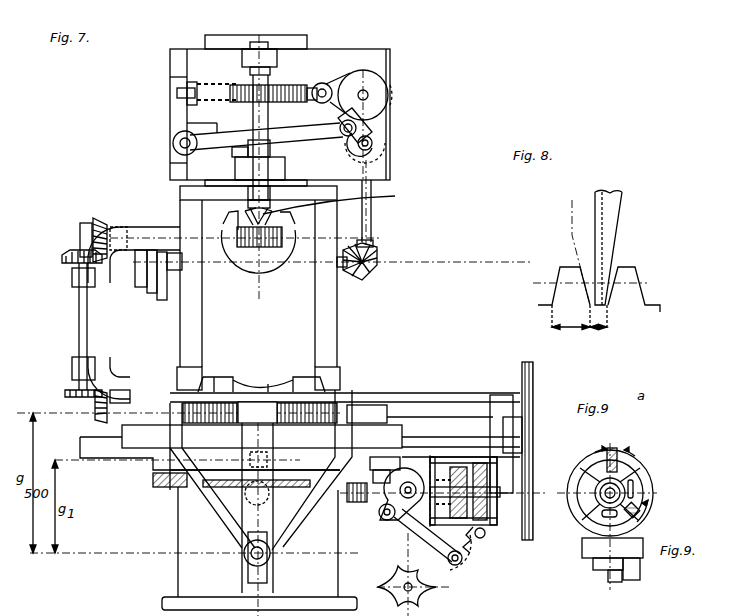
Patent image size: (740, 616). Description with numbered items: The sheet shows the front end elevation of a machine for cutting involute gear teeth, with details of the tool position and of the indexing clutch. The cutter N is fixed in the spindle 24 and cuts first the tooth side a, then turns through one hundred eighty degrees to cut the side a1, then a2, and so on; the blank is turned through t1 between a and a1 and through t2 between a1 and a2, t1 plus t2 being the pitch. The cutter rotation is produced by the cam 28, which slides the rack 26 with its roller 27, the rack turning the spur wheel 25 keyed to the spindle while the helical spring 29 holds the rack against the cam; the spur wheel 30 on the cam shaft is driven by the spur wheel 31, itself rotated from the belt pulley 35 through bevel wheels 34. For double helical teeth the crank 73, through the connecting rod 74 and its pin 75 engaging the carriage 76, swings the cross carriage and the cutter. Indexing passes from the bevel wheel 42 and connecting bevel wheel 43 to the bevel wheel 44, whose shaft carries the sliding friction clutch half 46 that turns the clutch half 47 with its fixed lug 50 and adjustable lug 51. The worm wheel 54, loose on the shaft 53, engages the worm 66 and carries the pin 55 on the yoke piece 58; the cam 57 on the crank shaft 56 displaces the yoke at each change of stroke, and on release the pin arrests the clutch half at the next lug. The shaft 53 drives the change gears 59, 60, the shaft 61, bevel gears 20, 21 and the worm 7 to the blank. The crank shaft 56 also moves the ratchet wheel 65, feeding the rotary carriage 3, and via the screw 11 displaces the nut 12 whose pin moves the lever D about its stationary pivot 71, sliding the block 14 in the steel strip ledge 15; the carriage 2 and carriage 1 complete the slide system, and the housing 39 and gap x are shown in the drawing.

In FIG. 7, the head cap 39 is at (235, 40).
In FIG. 7, the bevel wheel 42 is at (192, 62).
In FIG. 7, the helical spring 29 is at (188, 100).
In FIG. 7, the spur wheel 25 is at (262, 88).
In FIG. 7, the rack 26 is at (300, 87).
In FIG. 7, the roller 27 is at (337, 78).
In FIG. 7, the spur wheel 30 is at (389, 95).
In FIG. 7, the cam 28 is at (370, 100).
In FIG. 7, the connecting rod 74 is at (228, 142).
In FIG. 7, the pin 75 is at (185, 143).
In FIG. 7, the carriage 76 is at (178, 124).
In FIG. 7, the spur wheel 31 is at (372, 129).
In FIG. 7, the crank 73 is at (372, 147).
In FIG. 7, the spindle 24 is at (272, 150).
In FIG. 7, the cutter N is at (335, 201).
In FIG. 8, the cutter N is at (608, 247).
In FIG. 7, the worm 7 is at (255, 247).
In FIG. 7, the bevel wheels 34 is at (358, 260).
In FIG. 7, the bevel gear 21 is at (92, 222).
In FIG. 7, the belt pulley 35 is at (152, 293).
In FIG. 7, the bevel gear 20 is at (96, 412).
In FIG. 7, the shaft 61 is at (410, 400).
In FIG. 7, the rotary carriage 3 is at (312, 390).
In FIG. 7, the screw 11 is at (214, 392).
In FIG. 7, the nut 12 is at (268, 392).
In FIG. 7, the steel strip ledge 15 is at (356, 405).
In FIG. 7, the carriage 2 is at (262, 436).
In FIG. 7, the carriage 1 is at (80, 446).
In FIG. 7, the block 14 is at (160, 480).
In FIG. 7, the connecting bevel wheel 43 is at (205, 485).
In FIG. 7, the transmission gear lever D is at (255, 520).
In FIG. 7, the pivot 71 is at (244, 560).
In FIG. 7, the bevel wheel 44 is at (443, 503).
In FIG. 7, the crank shaft 56 is at (386, 515).
In FIG. 7, the clutch half 46 is at (420, 522).
In FIG. 7, the clutch half 47 is at (460, 470).
In FIG. 9, the clutch half 47 is at (612, 559).
In FIG. 7, the yoke piece 58 is at (438, 460).
In FIG. 7, the pin 55 is at (482, 465).
In FIG. 7, the change gear 60 is at (534, 375).
In FIG. 7, the change gear 59 is at (534, 473).
In FIG. 7, the shaft 53 is at (490, 503).
In FIG. 7, the worm wheel 54 is at (492, 500).
In FIG. 7, the worm 66 is at (483, 536).
In FIG. 7, the ratchet wheel 65 is at (474, 552).
In FIG. 7, the cam 57 is at (411, 574).
In FIG. 8, the tooth side a1 is at (564, 287).
In FIG. 8, the tooth side a2 is at (553, 296).
In FIG. 8, the tooth side a is at (634, 289).
In FIG. 8, the gap x is at (607, 307).
In FIG. 8, the angular turn t1 is at (598, 341).
In FIG. 9A, the angular turn t1 is at (652, 490).
In FIG. 8, the angular turn t2 is at (571, 341).
In FIG. 9A, the angular turn t2 is at (572, 530).
In FIG. 9A, the projecting lug 50 is at (618, 452).
In FIG. 9, the projecting lug 50 is at (608, 580).
In FIG. 9A, the lug 51 is at (640, 508).
In FIG. 9, the lug 51 is at (637, 578).